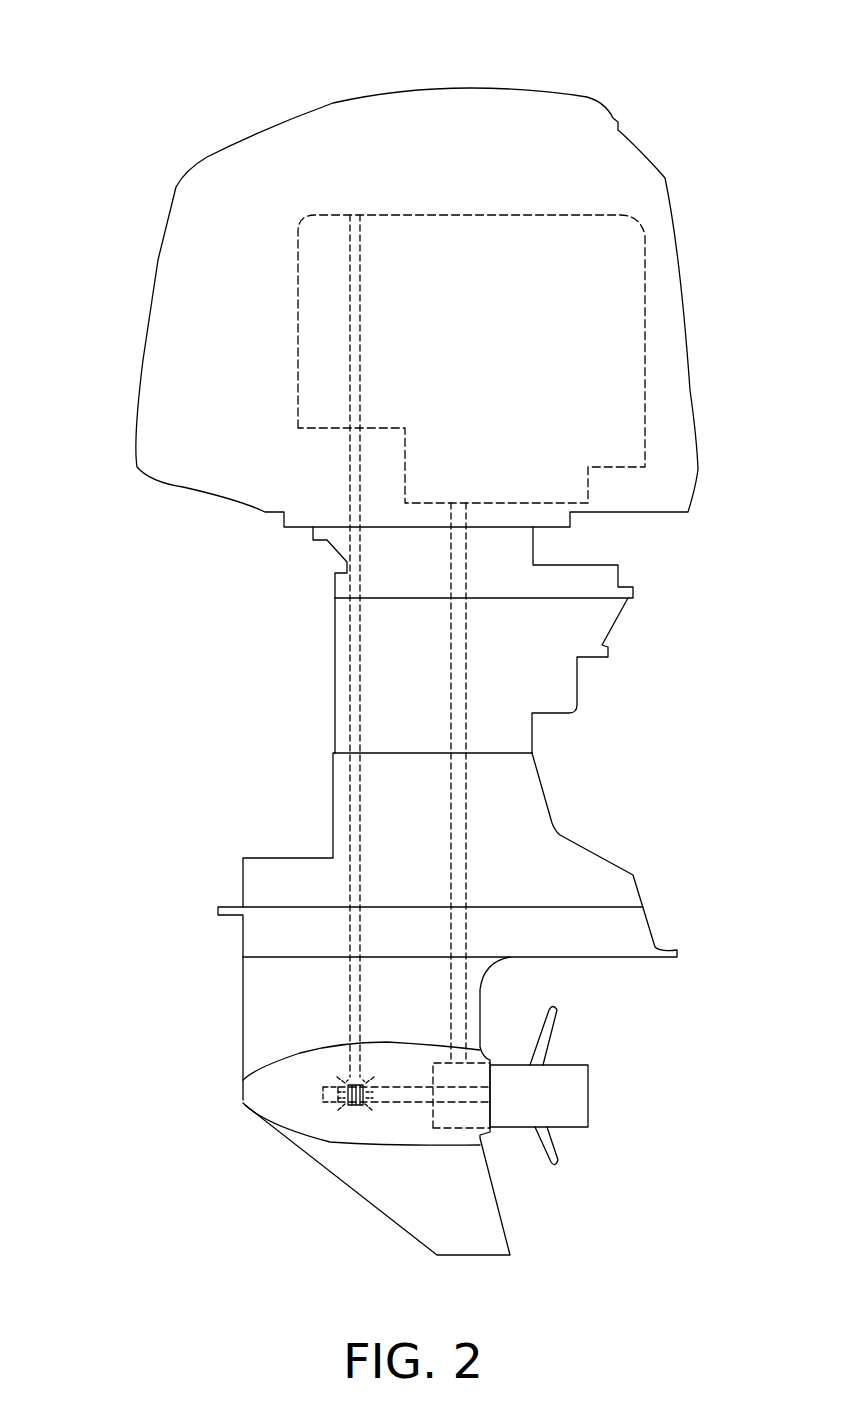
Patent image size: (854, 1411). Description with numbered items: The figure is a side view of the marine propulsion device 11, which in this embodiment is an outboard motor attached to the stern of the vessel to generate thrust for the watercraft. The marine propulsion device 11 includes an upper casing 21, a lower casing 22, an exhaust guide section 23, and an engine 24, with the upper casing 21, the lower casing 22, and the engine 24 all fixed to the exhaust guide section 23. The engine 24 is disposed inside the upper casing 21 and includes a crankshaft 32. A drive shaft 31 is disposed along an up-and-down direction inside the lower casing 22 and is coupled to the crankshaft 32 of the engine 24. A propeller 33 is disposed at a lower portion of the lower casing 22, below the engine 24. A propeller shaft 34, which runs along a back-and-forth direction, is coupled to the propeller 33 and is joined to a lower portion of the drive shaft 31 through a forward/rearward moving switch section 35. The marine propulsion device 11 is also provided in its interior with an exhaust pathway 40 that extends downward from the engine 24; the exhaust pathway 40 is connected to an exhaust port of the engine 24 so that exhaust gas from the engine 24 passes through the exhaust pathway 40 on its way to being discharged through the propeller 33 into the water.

The marine propulsion device 11 is at (210, 93).
The upper casing 21 is at (205, 162).
The lower casing 22 is at (330, 778).
The exhaust guide section 23 is at (345, 571).
The engine 24 is at (297, 328).
The drive shaft 31 is at (335, 831).
The crankshaft 32 is at (350, 395).
The propeller 33 is at (513, 1140).
The propeller shaft 34 is at (408, 1105).
The forward/rearward moving switch section 35 is at (343, 1100).
The exhaust pathway 40 is at (462, 783).